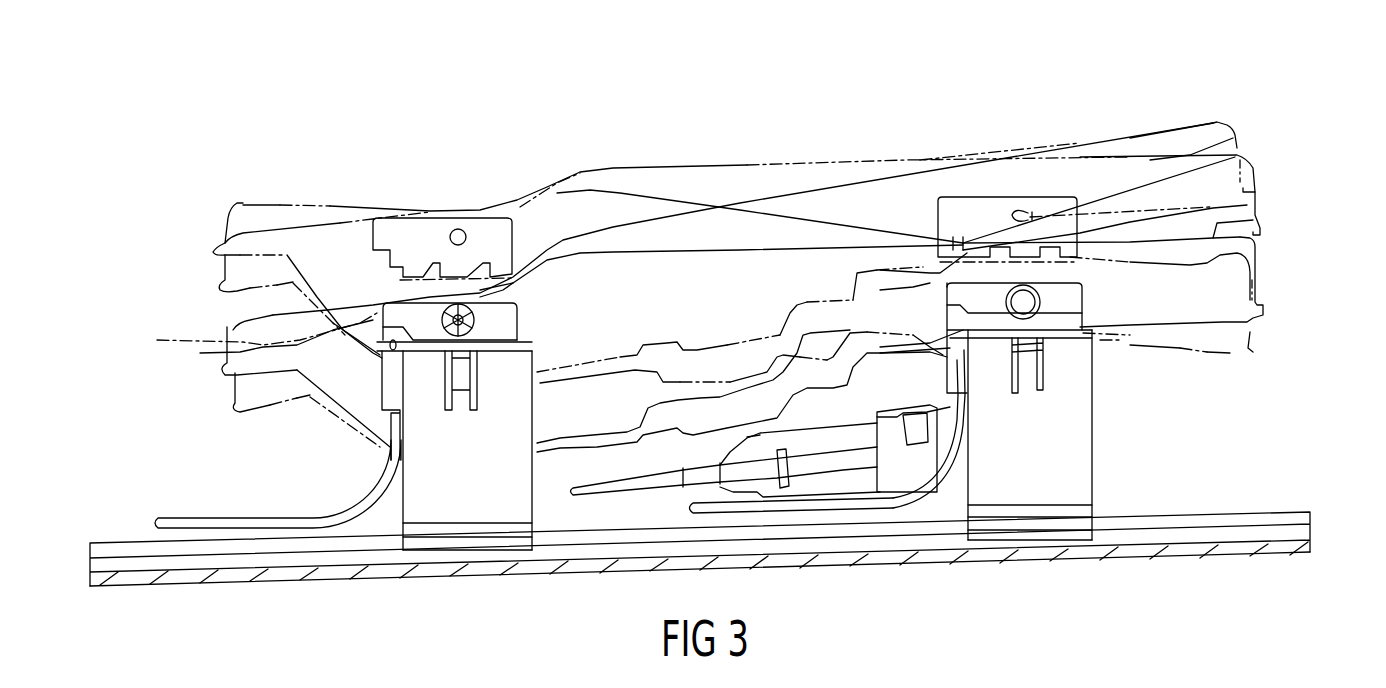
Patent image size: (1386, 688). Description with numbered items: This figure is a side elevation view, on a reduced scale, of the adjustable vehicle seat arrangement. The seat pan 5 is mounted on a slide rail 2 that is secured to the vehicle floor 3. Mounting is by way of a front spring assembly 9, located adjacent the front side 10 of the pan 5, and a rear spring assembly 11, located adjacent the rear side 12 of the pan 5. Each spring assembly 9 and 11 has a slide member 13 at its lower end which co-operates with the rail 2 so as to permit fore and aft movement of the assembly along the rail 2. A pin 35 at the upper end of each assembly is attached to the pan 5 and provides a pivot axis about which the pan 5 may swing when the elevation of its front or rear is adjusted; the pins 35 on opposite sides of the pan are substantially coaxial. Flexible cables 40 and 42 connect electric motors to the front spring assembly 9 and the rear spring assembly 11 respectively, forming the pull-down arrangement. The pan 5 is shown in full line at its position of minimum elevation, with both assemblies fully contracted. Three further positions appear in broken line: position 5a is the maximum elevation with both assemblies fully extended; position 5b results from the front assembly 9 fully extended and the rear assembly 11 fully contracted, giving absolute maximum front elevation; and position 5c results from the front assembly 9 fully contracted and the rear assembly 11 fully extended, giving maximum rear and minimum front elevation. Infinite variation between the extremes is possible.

The slide rail 2 is at (270, 563).
The vehicle floor 3 is at (183, 578).
The seat pan 5 is at (265, 318).
The seat pan position of maximum elevation 5a is at (315, 223).
The seat pan position of maximum front elevation 5b is at (1173, 67).
The seat pan position of maximum rear elevation 5c is at (218, 160).
The front spring assembly 9 is at (1033, 460).
The front side 10 is at (1260, 278).
The rear spring assembly 11 is at (453, 475).
The rear side 12 is at (200, 353).
The slide member 13 is at (497, 537).
The pin 35 is at (523, 313).
The cable 40 is at (855, 503).
The cable 42 is at (280, 518).